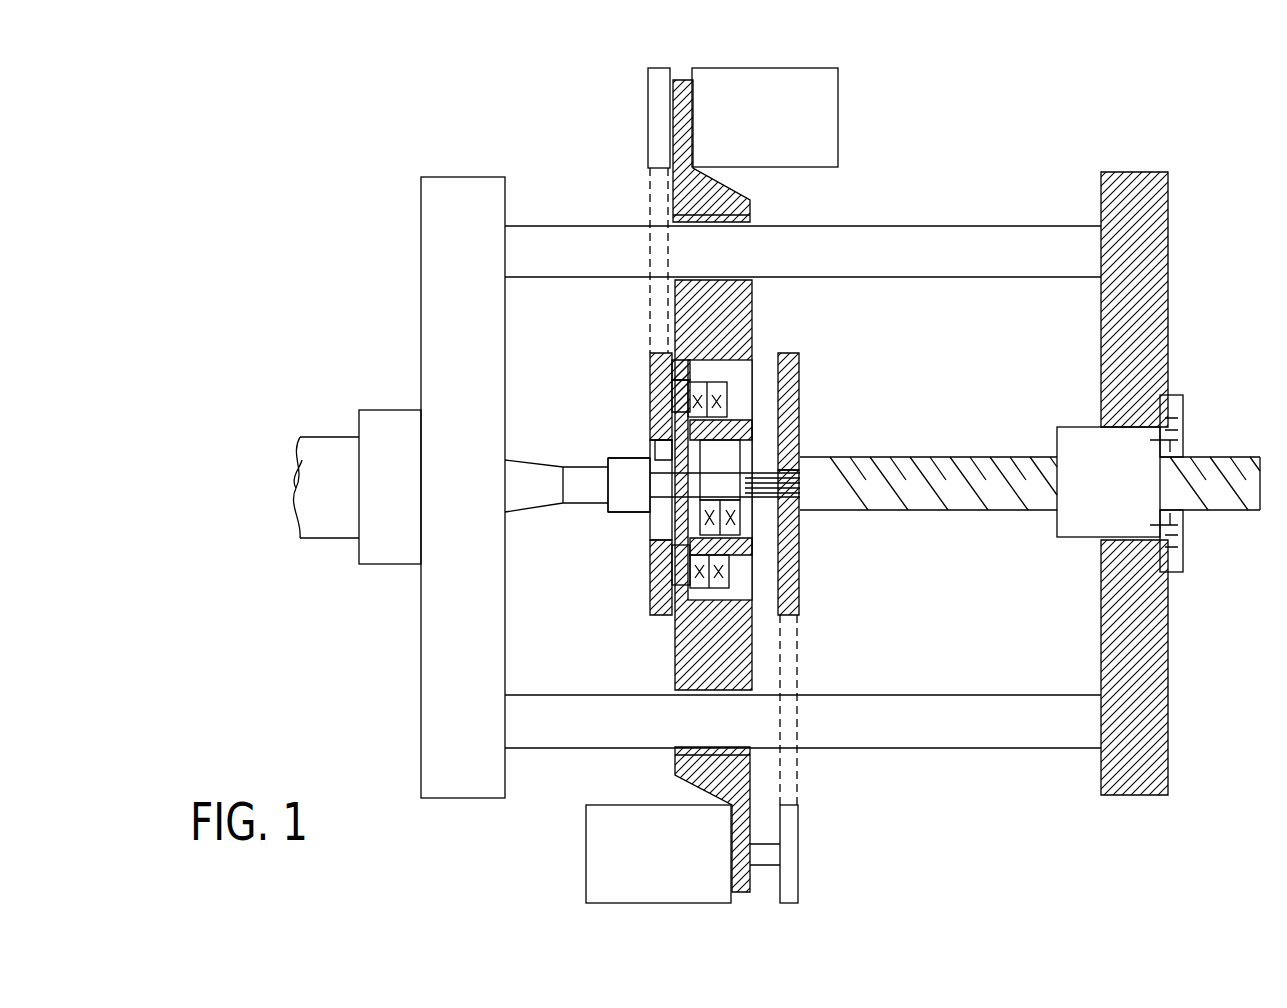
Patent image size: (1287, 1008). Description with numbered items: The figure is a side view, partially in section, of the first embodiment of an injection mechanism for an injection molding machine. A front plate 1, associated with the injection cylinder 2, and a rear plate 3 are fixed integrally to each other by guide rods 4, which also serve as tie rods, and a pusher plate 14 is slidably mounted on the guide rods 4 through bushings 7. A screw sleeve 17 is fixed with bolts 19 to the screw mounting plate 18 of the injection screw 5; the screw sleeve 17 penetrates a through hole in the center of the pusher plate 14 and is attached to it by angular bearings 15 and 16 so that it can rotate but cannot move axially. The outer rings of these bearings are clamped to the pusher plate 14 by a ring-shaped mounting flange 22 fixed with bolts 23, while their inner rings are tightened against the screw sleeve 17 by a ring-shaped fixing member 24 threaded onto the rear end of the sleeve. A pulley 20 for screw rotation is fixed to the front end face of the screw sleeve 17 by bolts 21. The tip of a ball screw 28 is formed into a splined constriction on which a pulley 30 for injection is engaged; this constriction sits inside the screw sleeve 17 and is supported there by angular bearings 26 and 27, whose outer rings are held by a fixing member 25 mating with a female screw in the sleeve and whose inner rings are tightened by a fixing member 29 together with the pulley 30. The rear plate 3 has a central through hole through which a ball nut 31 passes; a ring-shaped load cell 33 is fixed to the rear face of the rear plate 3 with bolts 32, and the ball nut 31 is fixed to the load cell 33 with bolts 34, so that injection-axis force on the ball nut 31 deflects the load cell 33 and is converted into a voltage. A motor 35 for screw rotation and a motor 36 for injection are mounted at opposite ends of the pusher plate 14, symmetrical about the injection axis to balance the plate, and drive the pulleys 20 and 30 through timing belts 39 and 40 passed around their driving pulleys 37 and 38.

The front plate 1 is at (432, 697).
The injection cylinder 2 is at (338, 527).
The rear plate 3 is at (1150, 635).
The guide rods 4 is at (960, 228).
The injection screw 5 is at (547, 497).
The bushings 7 is at (740, 197).
The pusher plate 14 is at (693, 662).
The angular bearing 15 is at (672, 394).
The angular bearing 16 is at (722, 382).
The screw sleeve 17 is at (752, 425).
The screw mounting plate 18 is at (648, 503).
The bolts 19 is at (662, 446).
The pulley for screw rotation 20 is at (650, 603).
The bolts 21 is at (657, 558).
The mounting flange 22 is at (672, 374).
The bolts 23 is at (668, 357).
The fixing member 24 is at (745, 568).
The fixing member 25 is at (752, 438).
The angular bearing 26 is at (670, 414).
The angular bearing 27 is at (752, 457).
The ball screw 28 is at (940, 500).
The fixing member 29 is at (665, 520).
The pulley for injection 30 is at (795, 552).
The ball nut 31 is at (1080, 528).
The bolts 32 is at (1160, 396).
The load cell 33 is at (1180, 418).
The bolts 34 is at (1175, 441).
The motor for screw rotation 35 is at (822, 106).
The motor for injection 36 is at (597, 845).
The driving pulley 37 is at (655, 100).
The driving pulley 38 is at (793, 838).
The timing belt 39 is at (648, 205).
The timing belt 40 is at (795, 772).